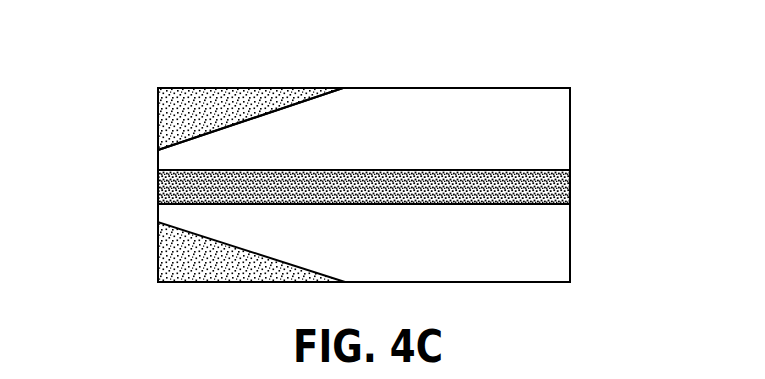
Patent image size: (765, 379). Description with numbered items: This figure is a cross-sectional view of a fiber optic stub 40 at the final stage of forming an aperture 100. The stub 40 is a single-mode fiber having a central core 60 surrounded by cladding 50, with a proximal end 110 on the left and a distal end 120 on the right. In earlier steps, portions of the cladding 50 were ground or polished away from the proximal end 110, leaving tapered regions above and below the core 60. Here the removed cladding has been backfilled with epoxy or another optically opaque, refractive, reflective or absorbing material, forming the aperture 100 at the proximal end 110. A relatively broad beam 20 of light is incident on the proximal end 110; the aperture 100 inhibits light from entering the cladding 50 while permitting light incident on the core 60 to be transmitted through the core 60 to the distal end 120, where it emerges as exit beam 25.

The beam 20 is at (157, 187).
The exit beam 25 is at (570, 186).
The fiber optic stub 40 is at (362, 69).
The cladding 50 is at (487, 118).
The core 60 is at (338, 204).
The aperture 100 is at (208, 265).
The proximal end 110 is at (97, 109).
The distal end 120 is at (632, 118).